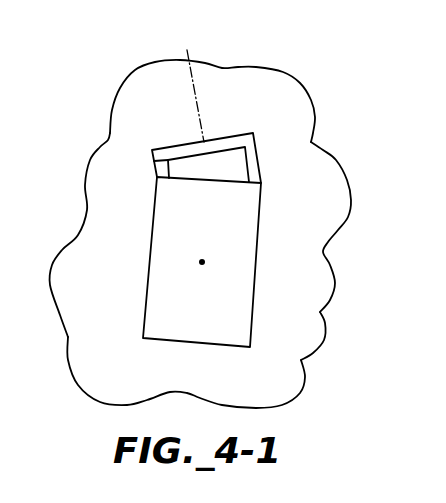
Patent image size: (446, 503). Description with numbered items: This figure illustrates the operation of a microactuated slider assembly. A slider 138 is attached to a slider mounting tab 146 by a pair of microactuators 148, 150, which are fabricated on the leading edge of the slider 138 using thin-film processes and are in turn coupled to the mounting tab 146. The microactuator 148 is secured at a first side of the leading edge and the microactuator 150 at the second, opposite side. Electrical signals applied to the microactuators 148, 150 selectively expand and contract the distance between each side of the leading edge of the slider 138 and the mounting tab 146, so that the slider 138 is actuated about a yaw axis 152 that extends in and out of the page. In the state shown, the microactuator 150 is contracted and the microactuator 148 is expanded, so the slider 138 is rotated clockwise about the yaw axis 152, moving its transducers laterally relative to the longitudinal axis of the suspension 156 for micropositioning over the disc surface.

The slider 138 is at (274, 219).
The mounting tab 146 is at (229, 130).
The microactuator 148 is at (253, 162).
The microactuator 150 is at (157, 173).
The yaw axis 152 is at (205, 262).
The suspension 156 is at (188, 49).